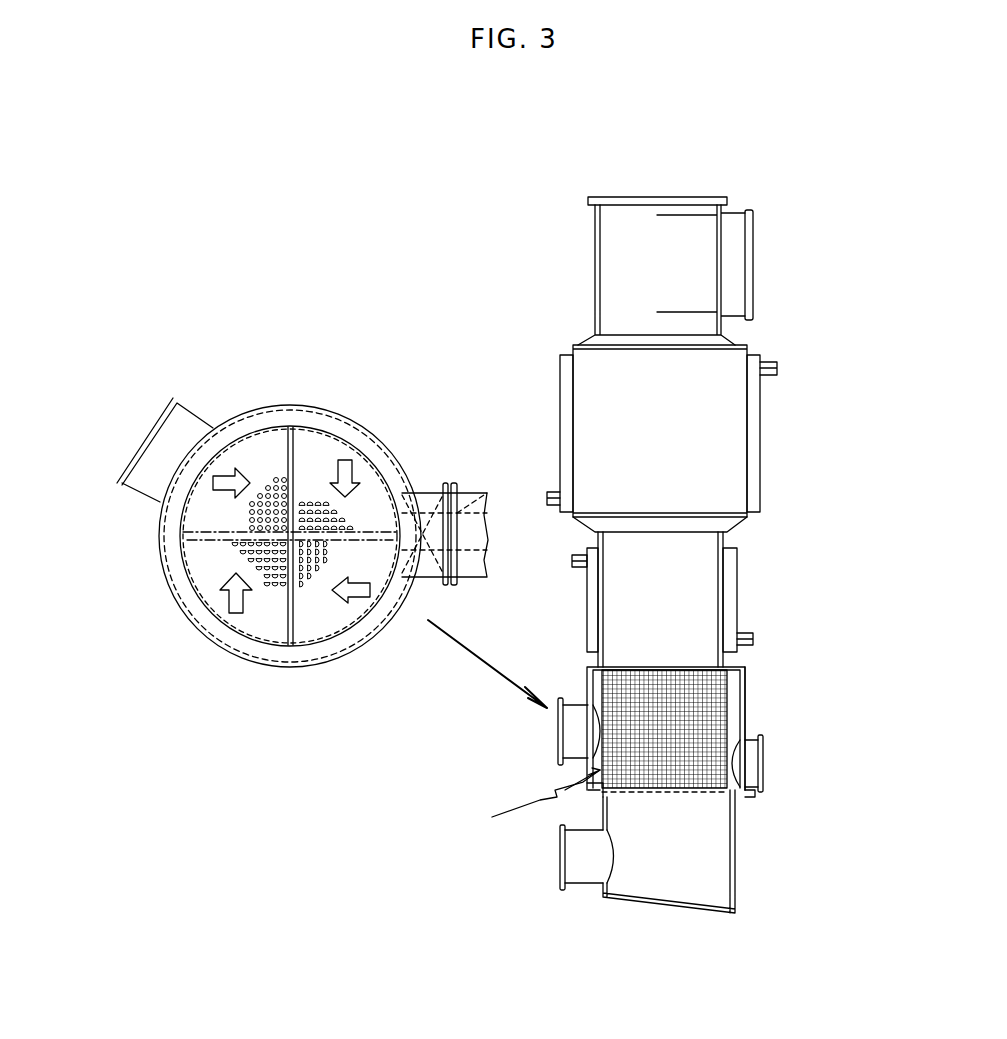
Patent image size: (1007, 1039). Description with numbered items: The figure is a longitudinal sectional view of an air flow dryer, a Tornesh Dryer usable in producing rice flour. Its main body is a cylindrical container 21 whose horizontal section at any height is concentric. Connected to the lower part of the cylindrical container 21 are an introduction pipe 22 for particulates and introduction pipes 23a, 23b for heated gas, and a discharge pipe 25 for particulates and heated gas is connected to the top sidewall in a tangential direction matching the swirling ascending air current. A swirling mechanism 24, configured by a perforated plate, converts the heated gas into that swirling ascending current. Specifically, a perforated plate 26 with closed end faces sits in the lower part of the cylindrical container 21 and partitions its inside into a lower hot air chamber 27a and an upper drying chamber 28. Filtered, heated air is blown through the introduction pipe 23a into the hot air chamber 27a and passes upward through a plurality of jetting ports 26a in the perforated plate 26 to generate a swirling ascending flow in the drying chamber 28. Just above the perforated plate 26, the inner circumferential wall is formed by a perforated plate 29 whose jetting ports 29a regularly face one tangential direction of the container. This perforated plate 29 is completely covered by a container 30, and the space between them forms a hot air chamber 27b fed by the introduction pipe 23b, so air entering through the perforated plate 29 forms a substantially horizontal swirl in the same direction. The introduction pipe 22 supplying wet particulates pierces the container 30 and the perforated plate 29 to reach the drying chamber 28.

The cylindrical container 21 is at (753, 483).
The introduction pipe for particulates 22 is at (743, 755).
The introduction pipe for heated gas 23a is at (570, 855).
The introduction pipe for heated gas 23b is at (567, 730).
The swirling mechanism 24 is at (526, 798).
The discharge pipe 25 is at (738, 262).
The perforated plate 26 is at (650, 792).
The jetting ports 26a is at (680, 792).
The hot air chamber 27a is at (683, 860).
The hot air chamber 27b is at (598, 690).
The drying chamber 28 is at (633, 560).
The perforated plate 29 is at (692, 700).
The jetting ports 29a is at (702, 713).
The container 30 is at (743, 710).